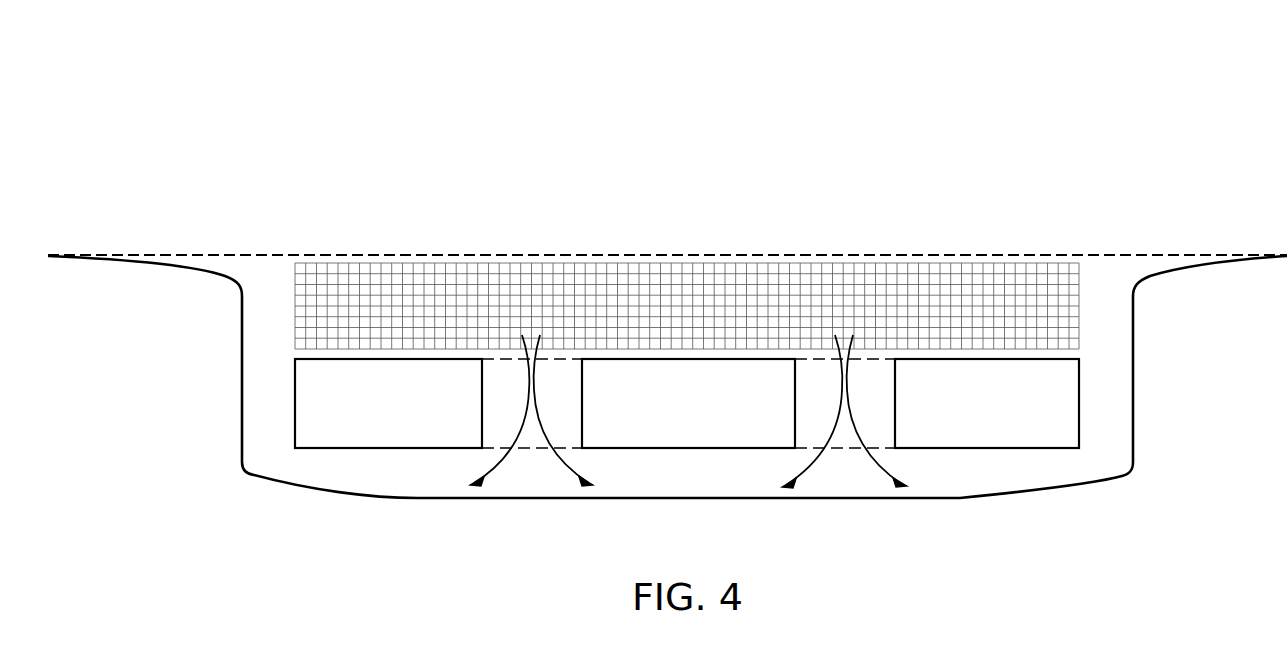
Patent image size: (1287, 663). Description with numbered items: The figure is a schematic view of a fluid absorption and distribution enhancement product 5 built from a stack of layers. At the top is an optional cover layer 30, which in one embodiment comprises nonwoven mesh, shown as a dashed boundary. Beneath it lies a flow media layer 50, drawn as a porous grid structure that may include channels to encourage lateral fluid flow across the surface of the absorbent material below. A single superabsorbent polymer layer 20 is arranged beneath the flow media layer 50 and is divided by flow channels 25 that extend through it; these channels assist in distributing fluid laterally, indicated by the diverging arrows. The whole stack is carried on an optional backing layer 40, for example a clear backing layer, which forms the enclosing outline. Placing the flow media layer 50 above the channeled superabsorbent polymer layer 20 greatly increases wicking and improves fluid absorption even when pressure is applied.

The fluid absorption and distribution enhancement (FADE) product 5 is at (1173, 98).
The superabsorbent polymer layer 20 is at (705, 416).
The flow channels 25 is at (523, 472).
The cover layer 30 is at (245, 255).
The backing layer 40 is at (343, 498).
The flow media layer 50 is at (1070, 327).